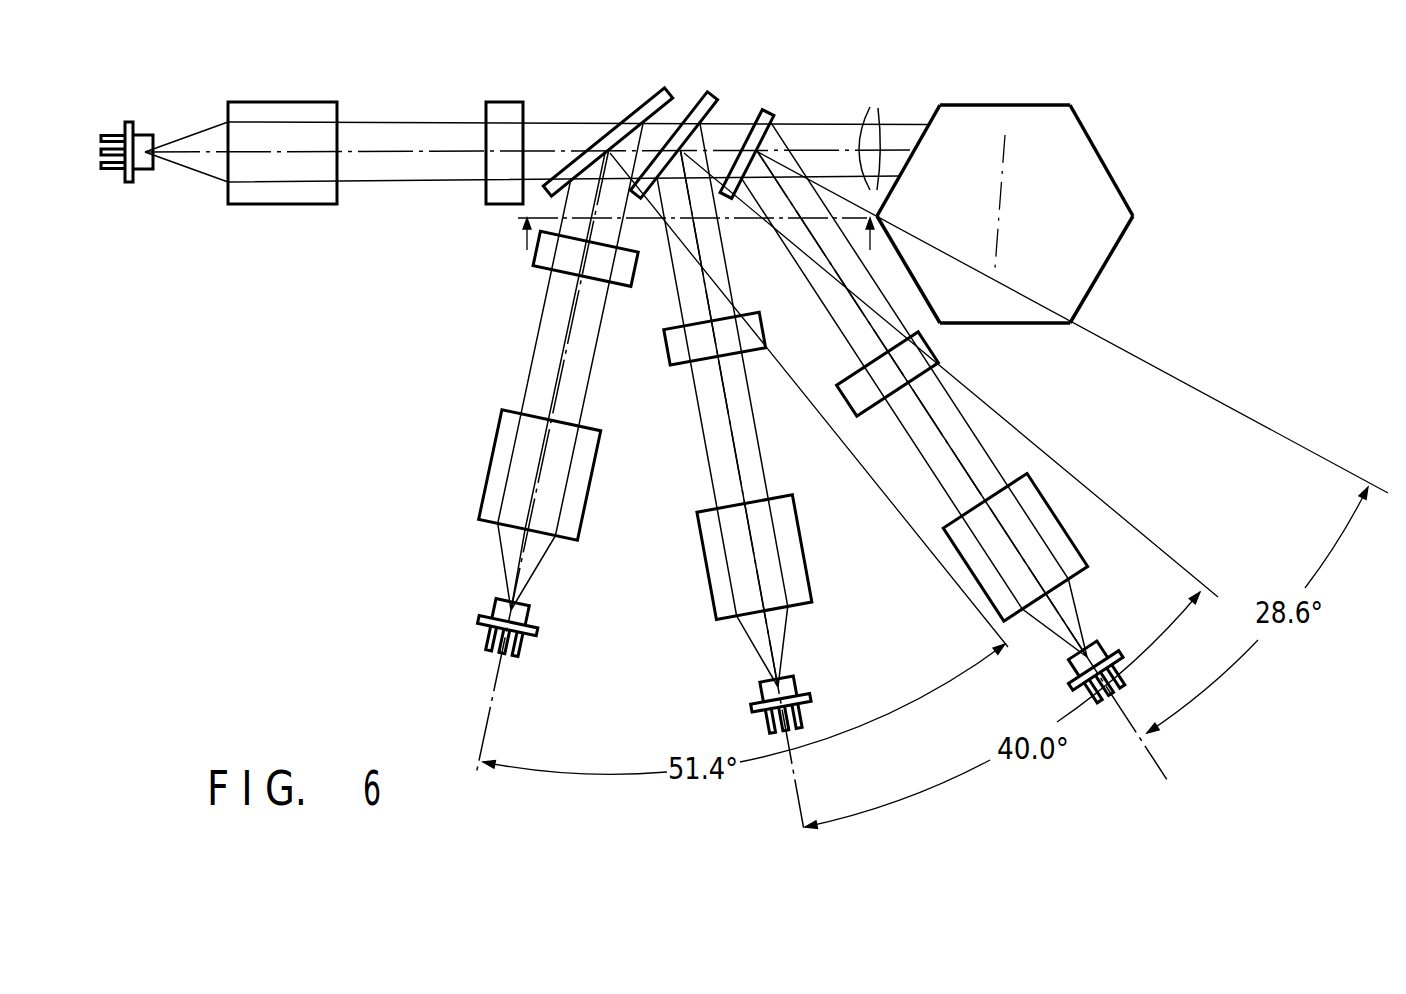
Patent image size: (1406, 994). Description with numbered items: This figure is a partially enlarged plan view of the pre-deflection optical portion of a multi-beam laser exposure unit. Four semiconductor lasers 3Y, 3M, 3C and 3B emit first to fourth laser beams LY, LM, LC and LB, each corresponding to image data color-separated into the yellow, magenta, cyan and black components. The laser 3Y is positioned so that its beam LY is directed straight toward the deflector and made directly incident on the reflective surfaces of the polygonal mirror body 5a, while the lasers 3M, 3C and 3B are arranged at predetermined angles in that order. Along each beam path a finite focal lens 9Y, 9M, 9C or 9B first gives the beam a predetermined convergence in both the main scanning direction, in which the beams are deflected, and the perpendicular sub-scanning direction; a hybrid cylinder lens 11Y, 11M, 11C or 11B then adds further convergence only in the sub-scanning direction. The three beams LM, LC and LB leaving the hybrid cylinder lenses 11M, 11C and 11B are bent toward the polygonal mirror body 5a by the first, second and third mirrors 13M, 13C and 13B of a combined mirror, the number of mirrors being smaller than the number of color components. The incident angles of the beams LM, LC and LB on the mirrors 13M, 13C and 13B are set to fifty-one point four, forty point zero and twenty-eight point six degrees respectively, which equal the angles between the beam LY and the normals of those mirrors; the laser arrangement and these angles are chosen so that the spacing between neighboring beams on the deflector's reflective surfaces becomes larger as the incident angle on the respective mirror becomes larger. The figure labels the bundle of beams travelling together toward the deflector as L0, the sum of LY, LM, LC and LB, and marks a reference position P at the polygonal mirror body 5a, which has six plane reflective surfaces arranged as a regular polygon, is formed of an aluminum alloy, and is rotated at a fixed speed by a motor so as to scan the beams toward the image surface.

The first semiconductor laser 3Y is at (140, 136).
The finite focal lens 9Y is at (281, 104).
The hybrid cylinder lens 11Y is at (497, 110).
The second semiconductor laser 3M is at (488, 597).
The finite focal lens 9M is at (490, 475).
The hybrid cylinder lens 11M is at (545, 265).
The third semiconductor laser 3C is at (764, 699).
The finite focal lens 9C is at (719, 588).
The hybrid cylinder lens 11C is at (683, 357).
The fourth semiconductor laser 3B is at (1082, 667).
The finite focal lens 9B is at (972, 562).
The hybrid cylinder lens 11B is at (850, 383).
The first mirror 13M is at (647, 107).
The second mirror 13C is at (708, 102).
The third mirror 13B is at (763, 108).
The polygonal mirror body 5a is at (1013, 130).
The first laser beam LY is at (403, 173).
The second laser beam LM is at (533, 353).
The third laser beam LC is at (714, 465).
The fourth laser beam LB is at (963, 430).
The combined laser beam / lens L0 is at (873, 107).
The reference point on polygon mirror P is at (703, 241).